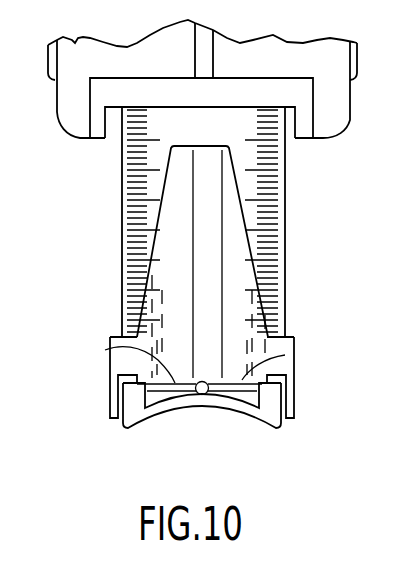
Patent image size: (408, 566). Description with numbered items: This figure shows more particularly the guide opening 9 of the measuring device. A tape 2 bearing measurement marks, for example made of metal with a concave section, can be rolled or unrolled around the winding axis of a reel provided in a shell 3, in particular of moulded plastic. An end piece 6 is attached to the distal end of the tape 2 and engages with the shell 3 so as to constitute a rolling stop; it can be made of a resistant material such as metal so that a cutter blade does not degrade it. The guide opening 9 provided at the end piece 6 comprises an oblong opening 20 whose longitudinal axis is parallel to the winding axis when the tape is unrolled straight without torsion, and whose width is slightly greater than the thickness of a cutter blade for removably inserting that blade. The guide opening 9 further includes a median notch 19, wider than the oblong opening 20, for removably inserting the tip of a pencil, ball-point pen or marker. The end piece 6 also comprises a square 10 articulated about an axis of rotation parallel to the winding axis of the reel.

The tape 2 is at (254, 196).
The shell 3 is at (68, 110).
The end piece 6 is at (262, 414).
The guide opening 9 is at (240, 383).
The square 10 is at (109, 396).
The median notch 19 is at (201, 380).
The oblong opening 20 is at (105, 350).